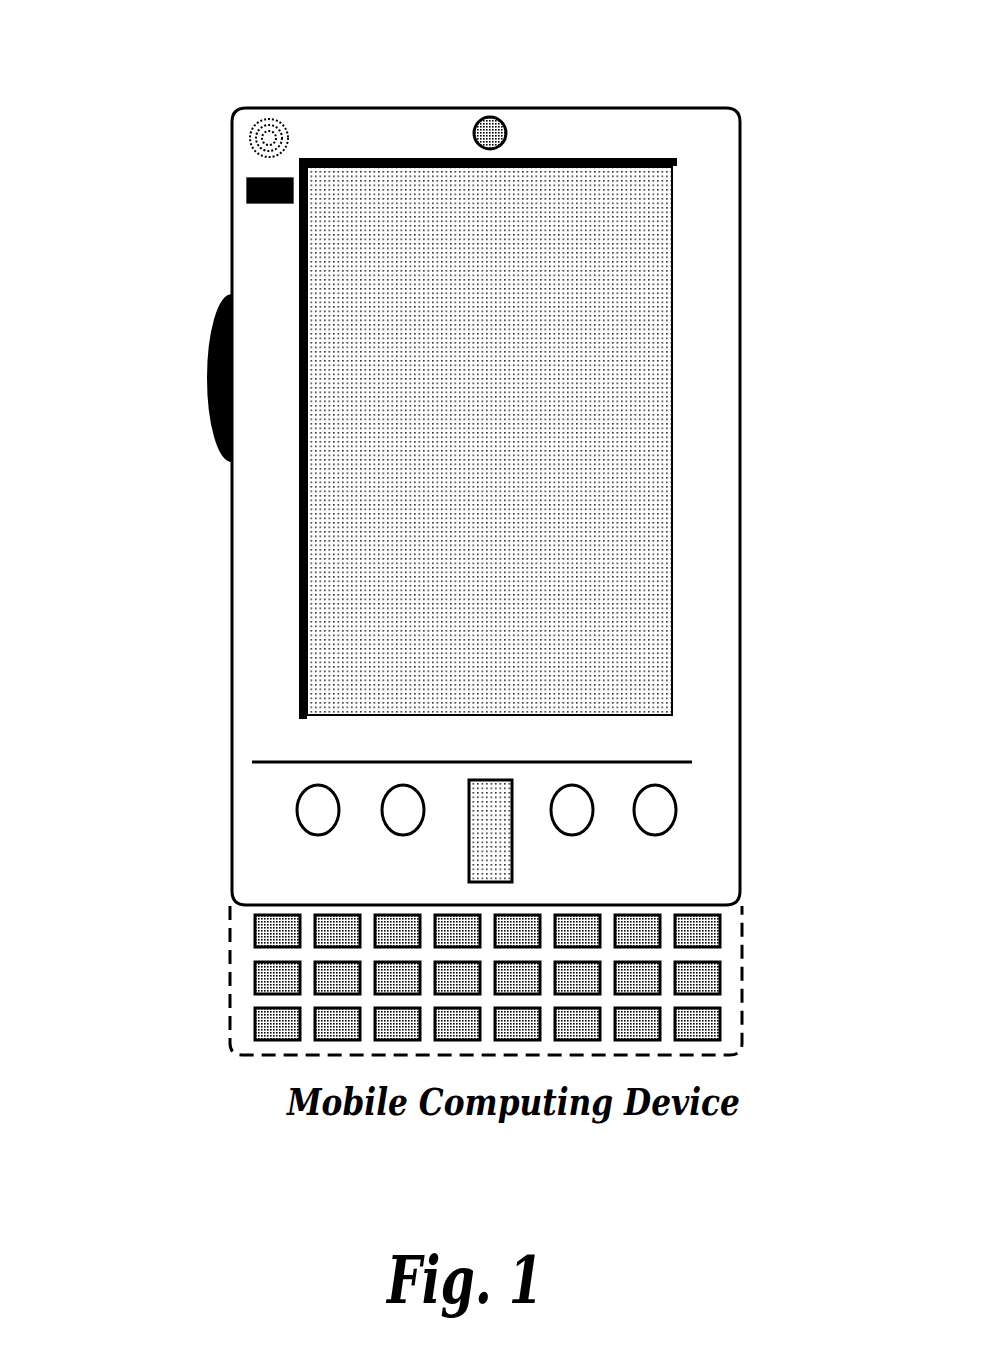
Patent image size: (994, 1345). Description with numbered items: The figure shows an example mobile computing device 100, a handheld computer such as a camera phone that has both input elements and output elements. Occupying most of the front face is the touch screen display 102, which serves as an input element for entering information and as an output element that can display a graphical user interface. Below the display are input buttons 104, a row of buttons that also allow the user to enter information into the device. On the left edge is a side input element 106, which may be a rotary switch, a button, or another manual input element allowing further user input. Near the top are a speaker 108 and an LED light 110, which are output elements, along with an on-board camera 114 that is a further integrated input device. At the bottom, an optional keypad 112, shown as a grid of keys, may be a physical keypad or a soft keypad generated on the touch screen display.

The mobile computing device 100 is at (740, 128).
The touch screen display 102 is at (337, 637).
The input buttons 104 is at (248, 905).
The side input element 106 is at (208, 345).
The speaker 108 is at (249, 137).
The LED light 110 is at (247, 188).
The keypad 112 is at (230, 1013).
The on-board camera 114 is at (506, 123).